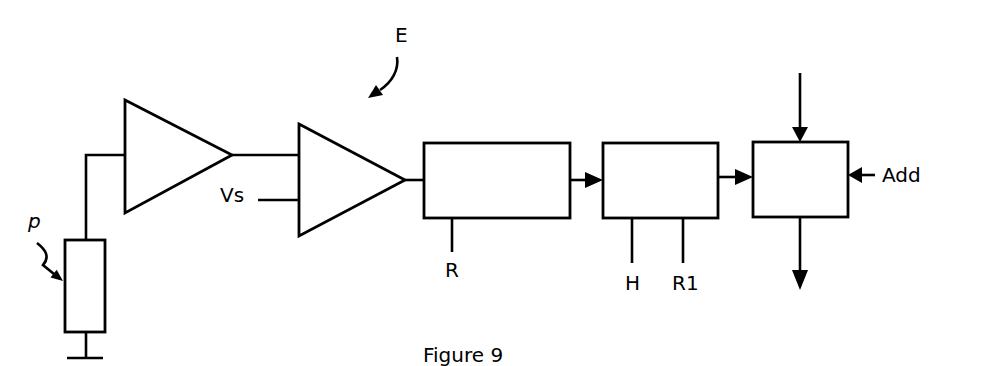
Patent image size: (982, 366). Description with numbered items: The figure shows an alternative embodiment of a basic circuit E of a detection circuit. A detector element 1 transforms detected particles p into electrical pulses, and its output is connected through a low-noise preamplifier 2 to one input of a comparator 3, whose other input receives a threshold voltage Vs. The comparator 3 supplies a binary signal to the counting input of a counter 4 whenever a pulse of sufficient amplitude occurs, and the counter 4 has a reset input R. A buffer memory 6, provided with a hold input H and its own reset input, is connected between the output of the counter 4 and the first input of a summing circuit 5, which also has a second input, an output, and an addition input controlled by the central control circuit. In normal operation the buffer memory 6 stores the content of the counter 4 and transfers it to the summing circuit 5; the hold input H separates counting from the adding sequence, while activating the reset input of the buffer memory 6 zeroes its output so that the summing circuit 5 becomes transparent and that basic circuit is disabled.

The detector element 1 is at (105, 277).
The preamplifier 2 is at (148, 200).
The comparator 3 is at (330, 220).
The counter 4 is at (500, 218).
The summing circuit 5 is at (762, 142).
The buffer memory 6 is at (650, 143).